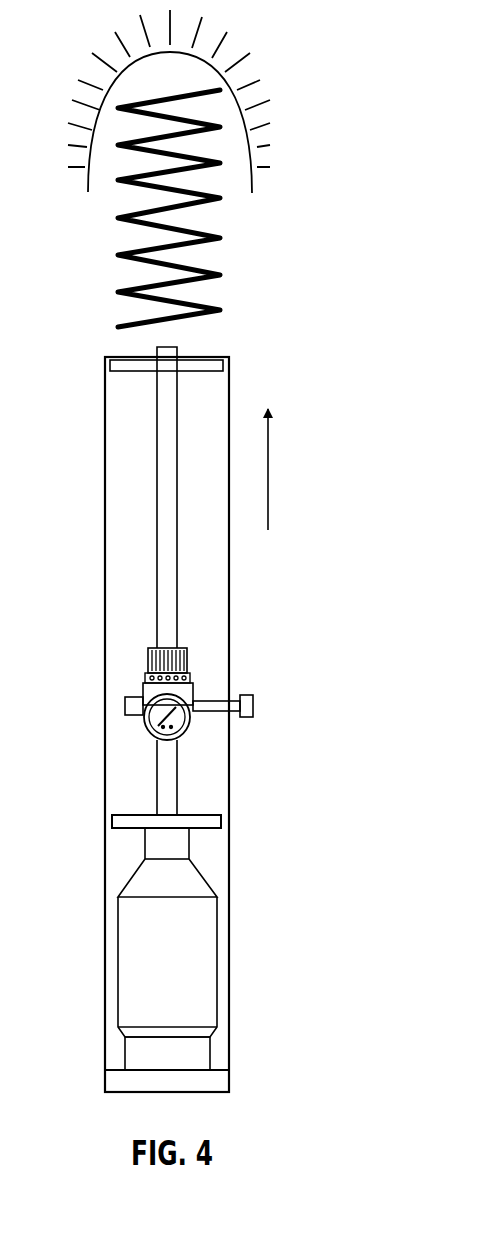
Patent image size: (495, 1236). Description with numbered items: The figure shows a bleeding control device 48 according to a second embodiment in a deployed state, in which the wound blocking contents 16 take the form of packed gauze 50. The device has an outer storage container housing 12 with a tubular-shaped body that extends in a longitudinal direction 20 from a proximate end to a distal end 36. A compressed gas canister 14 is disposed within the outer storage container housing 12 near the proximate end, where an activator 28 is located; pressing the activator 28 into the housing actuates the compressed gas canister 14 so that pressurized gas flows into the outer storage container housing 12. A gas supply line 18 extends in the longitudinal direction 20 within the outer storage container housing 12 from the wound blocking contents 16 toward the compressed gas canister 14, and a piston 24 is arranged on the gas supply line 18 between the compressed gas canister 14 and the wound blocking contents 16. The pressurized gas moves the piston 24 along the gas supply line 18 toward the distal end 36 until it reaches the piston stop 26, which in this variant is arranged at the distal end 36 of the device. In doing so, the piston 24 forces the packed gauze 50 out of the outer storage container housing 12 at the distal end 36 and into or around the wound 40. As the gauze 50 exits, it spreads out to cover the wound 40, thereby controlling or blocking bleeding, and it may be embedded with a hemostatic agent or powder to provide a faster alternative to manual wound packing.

The outer storage container housing 12 is at (229, 758).
The compressed gas canister 14 is at (208, 932).
The wound blocking contents 16 is at (256, 256).
The gas supply line 18 is at (177, 598).
The longitudinal direction 20 is at (268, 480).
The piston 24 is at (219, 366).
The piston stop 26 is at (130, 362).
The activator 28 is at (217, 1080).
The distal end 36 is at (222, 360).
The wound 40 is at (101, 191).
The bleeding control device 48 is at (79, 363).
The packed gauze 50 is at (222, 198).